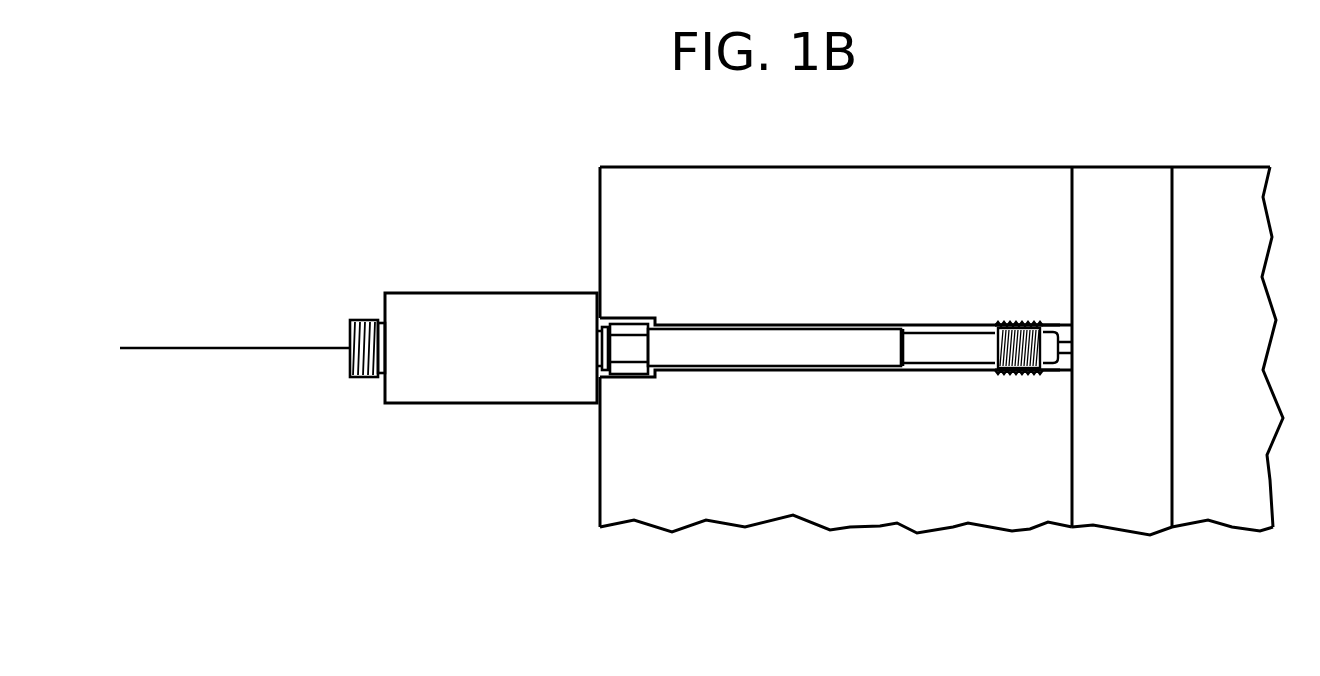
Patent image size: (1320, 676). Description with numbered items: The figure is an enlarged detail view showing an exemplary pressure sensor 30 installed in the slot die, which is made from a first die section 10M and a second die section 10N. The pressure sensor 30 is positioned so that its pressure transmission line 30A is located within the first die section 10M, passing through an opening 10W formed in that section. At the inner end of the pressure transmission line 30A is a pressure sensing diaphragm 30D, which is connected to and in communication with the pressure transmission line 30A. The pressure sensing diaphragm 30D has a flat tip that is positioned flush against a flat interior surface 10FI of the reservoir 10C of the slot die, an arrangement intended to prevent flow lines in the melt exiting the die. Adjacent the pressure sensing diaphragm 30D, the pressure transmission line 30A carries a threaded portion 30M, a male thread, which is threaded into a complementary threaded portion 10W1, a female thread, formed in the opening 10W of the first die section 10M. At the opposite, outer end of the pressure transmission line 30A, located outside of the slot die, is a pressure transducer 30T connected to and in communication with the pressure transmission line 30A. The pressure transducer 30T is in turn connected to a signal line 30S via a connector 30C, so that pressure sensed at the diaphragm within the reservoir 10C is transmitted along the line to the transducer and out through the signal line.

The pressure sensor 30 is at (699, 192).
The pressure transmission line 30A is at (740, 340).
The connector 30C is at (365, 318).
The pressure sensing diaphragm 30D is at (1076, 338).
The threaded portion 30M is at (1020, 322).
The signal line 30S is at (302, 348).
The pressure transducer 30T is at (497, 312).
The first die section 10M is at (614, 452).
The opening 10W is at (765, 373).
The complementary threaded portion 10W1 is at (1030, 375).
The flat interior surface 10FI is at (1072, 425).
The reservoir 10C is at (1123, 432).
The second die section 10N is at (1222, 505).